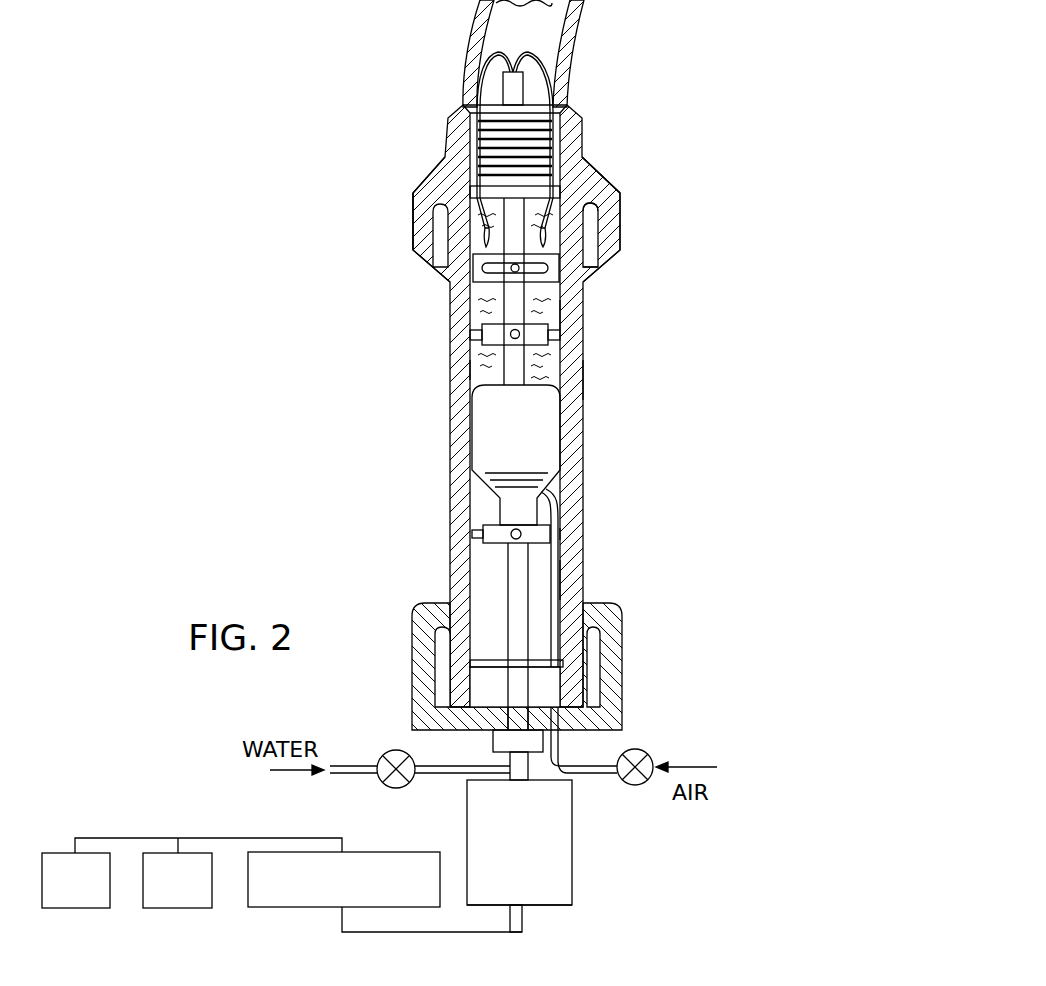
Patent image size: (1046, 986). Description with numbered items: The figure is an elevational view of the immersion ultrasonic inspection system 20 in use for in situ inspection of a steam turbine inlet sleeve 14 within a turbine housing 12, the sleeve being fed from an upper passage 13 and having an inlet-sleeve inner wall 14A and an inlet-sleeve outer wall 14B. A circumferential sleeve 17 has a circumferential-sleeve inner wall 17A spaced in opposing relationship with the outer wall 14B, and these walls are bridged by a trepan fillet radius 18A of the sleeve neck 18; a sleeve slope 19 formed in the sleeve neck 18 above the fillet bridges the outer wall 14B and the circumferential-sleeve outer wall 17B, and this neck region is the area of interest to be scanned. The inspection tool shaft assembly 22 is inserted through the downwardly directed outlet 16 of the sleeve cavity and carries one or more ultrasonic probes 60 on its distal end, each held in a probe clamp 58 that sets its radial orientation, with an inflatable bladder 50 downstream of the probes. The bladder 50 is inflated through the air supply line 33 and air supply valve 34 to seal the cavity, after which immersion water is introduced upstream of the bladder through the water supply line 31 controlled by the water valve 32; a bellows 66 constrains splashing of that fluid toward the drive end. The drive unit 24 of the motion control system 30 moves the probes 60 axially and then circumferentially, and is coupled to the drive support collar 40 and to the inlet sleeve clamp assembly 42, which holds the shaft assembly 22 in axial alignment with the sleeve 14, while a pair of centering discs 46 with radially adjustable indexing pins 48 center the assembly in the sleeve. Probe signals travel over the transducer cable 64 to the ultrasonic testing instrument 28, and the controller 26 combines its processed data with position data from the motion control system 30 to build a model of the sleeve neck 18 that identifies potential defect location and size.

The handpiece 12 is at (395, 101).
The supply tube 13 is at (565, 25).
The steam turbine inlet sleeve 14 is at (572, 418).
The inlet-sleeve inner wall 14A is at (580, 316).
The inlet-sleeve outer wall 14B is at (580, 378).
The outlet 16 is at (470, 690).
The circumferential sleeve 17 is at (598, 262).
The circumferential-sleeve inner wall 17A is at (590, 275).
The circumferential-sleeve outer wall 17B is at (600, 232).
The sleeve neck 18 is at (590, 190).
The trepan fillet radius 18A is at (625, 213).
The sleeve slope 19 is at (612, 197).
The immersion ultrasonic inspection system 20 is at (626, 864).
The inspection tool shaft assembly 22 is at (492, 378).
The drive unit 24 is at (555, 888).
The controller 26 is at (290, 895).
The ultrasonic testing instrument 28 is at (165, 900).
The motion control system 30 is at (62, 900).
The water supply line 31 is at (432, 775).
The water valve 32 is at (385, 755).
The air supply line 33 is at (565, 575).
The air supply valve 34 is at (640, 752).
The drive support collar 40 is at (525, 745).
The inlet sleeve clamp assembly 42 is at (605, 665).
The centering discs 46 is at (480, 370).
The indexing pins 48 is at (478, 336).
The inflatable bladder 50 is at (537, 455).
The probe clamp 58 is at (473, 275).
The ultrasonic probe 60 is at (487, 234).
The transducer cable 64 is at (490, 54).
The bellows 66 is at (475, 152).